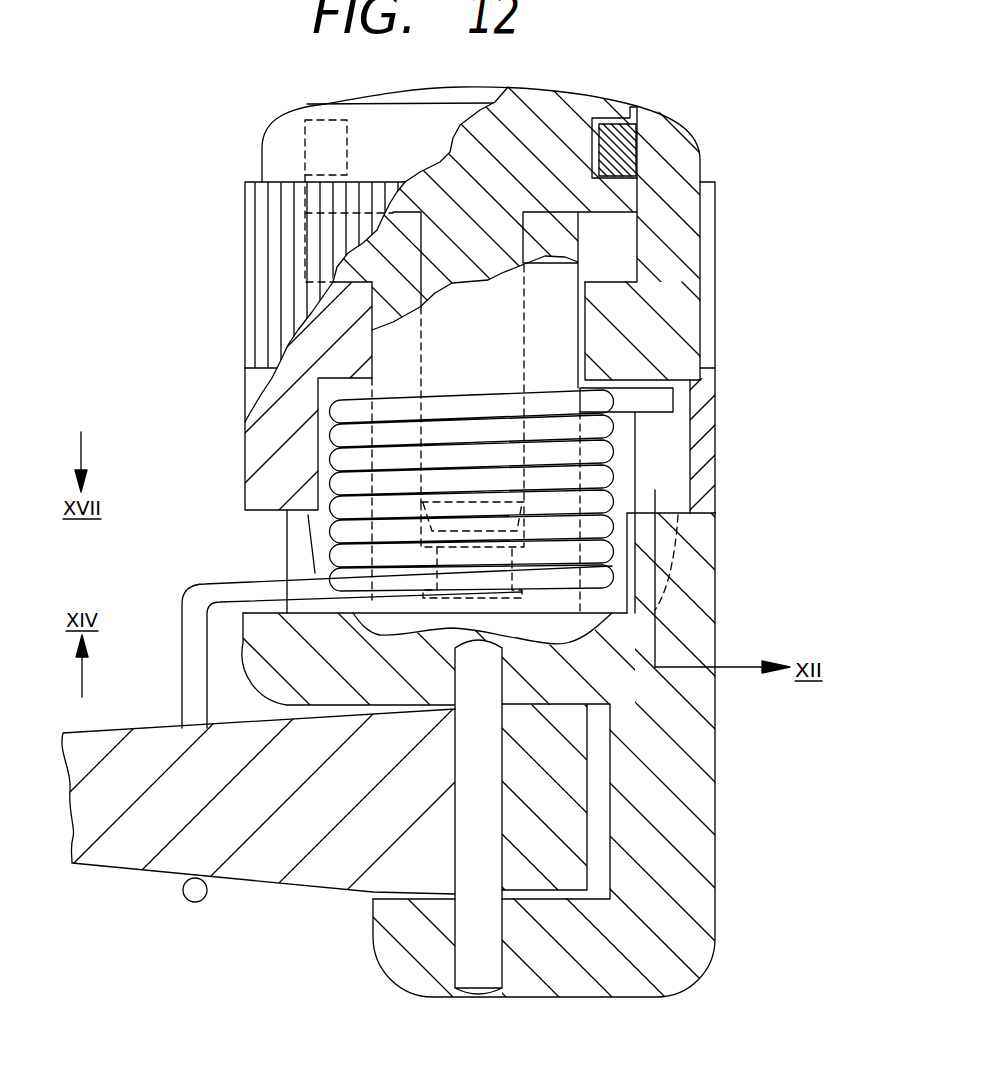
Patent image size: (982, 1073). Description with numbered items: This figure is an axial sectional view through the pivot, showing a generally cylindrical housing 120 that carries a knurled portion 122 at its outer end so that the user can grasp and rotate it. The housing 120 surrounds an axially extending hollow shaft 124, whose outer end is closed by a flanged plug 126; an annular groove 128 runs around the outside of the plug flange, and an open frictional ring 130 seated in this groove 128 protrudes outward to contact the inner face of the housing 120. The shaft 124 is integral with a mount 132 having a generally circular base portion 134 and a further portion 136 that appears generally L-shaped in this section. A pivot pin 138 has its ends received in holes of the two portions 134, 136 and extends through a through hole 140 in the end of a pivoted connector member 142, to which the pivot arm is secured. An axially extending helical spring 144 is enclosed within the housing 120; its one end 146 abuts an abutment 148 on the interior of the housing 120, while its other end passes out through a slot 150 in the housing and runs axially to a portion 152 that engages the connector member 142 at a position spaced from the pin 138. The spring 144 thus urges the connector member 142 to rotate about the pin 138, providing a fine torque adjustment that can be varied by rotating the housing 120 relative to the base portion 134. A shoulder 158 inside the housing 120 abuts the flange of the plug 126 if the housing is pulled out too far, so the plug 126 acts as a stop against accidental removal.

The housing 120 is at (680, 326).
The knurled portion 122 is at (283, 257).
The hollow shaft 124 is at (563, 242).
The flanged plug 126 is at (530, 97).
The annular groove 128 is at (603, 120).
The open frictional ring 130 is at (618, 152).
The mount 132 is at (680, 727).
The base portion 134 is at (283, 652).
The further portion 136 is at (675, 927).
The pivot pin 138 is at (480, 866).
The through hole 140 is at (503, 858).
The pivoted connector member 142 is at (107, 850).
The helical spring 144 is at (352, 462).
The spring end 146 is at (657, 397).
The abutment 148 is at (662, 460).
The slot 150 is at (277, 538).
The spring end portion 152 is at (208, 884).
The shoulder 158 is at (617, 280).